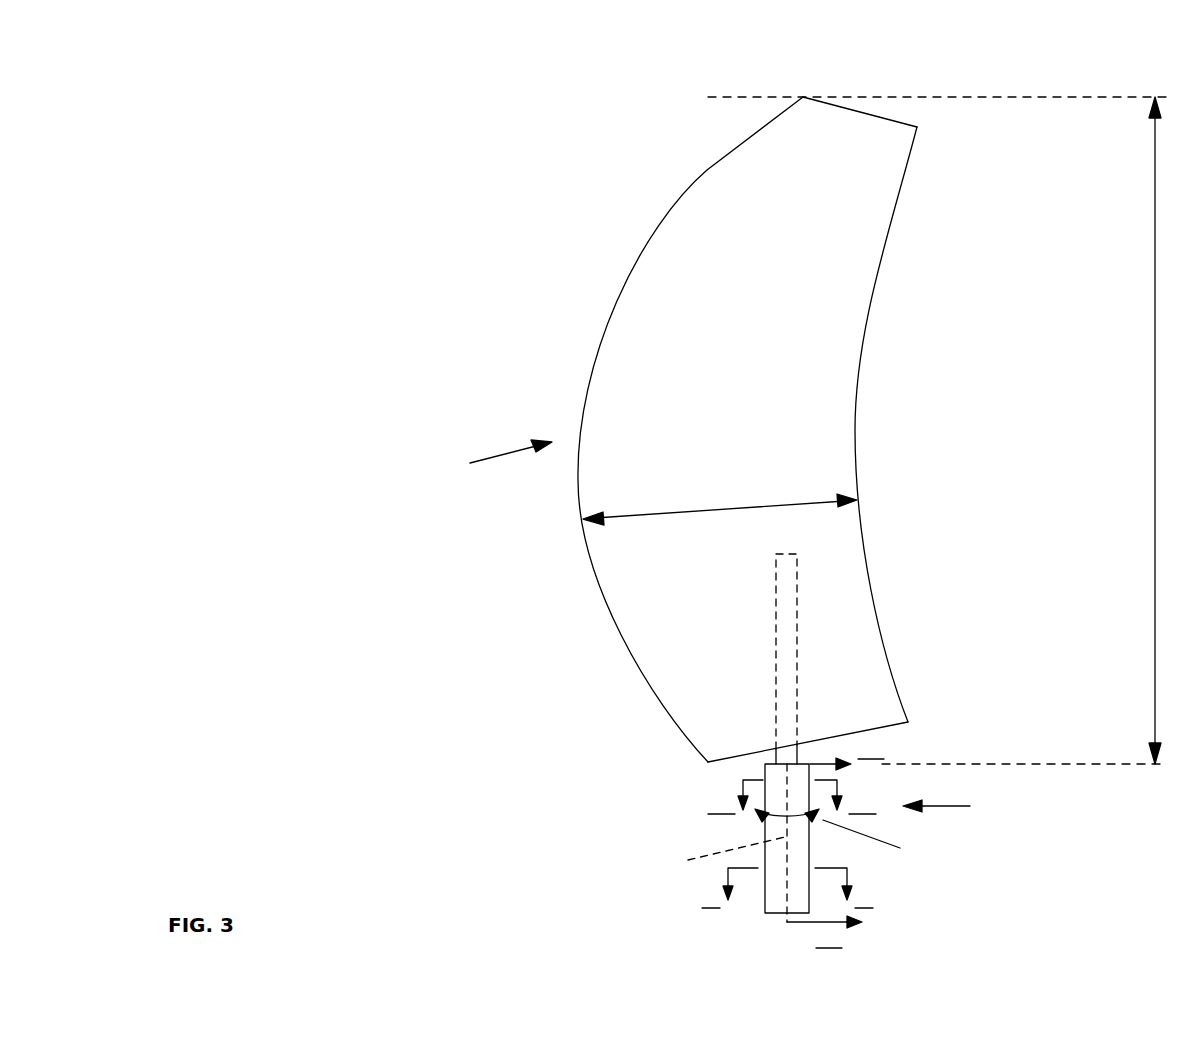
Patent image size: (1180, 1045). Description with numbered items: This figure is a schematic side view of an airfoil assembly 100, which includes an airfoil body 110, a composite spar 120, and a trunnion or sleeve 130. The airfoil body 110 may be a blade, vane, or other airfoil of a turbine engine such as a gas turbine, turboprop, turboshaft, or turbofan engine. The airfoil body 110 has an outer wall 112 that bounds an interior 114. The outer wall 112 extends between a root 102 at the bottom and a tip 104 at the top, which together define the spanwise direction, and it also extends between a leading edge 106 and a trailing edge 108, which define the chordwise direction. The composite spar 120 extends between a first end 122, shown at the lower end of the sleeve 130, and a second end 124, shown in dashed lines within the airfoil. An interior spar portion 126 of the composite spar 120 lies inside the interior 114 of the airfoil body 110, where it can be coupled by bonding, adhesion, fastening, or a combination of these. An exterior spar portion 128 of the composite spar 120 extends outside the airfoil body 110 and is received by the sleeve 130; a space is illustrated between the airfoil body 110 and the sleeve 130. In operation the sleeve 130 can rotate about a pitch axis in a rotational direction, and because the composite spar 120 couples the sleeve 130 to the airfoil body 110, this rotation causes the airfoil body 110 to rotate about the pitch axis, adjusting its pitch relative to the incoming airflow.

The airfoil assembly 100 is at (334, 172).
The root 102 is at (729, 762).
The tip 104 is at (887, 117).
The leading edge 106 is at (652, 237).
The trailing edge 108 is at (881, 258).
The airfoil body 110 is at (489, 460).
The outer wall 112 is at (752, 195).
The interior 114 is at (833, 580).
The composite spar 120 is at (773, 715).
The first end 122 is at (777, 913).
The second end 124 is at (797, 554).
The interior spar portion 126 is at (798, 657).
The exterior spar portion 128 is at (730, 758).
The sleeve 130 is at (958, 808).